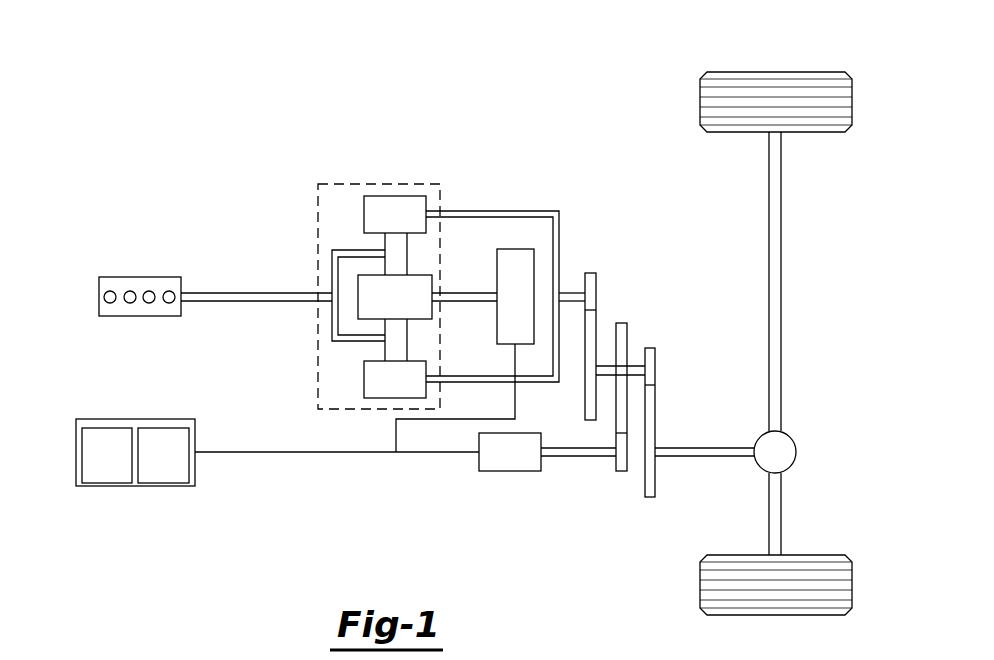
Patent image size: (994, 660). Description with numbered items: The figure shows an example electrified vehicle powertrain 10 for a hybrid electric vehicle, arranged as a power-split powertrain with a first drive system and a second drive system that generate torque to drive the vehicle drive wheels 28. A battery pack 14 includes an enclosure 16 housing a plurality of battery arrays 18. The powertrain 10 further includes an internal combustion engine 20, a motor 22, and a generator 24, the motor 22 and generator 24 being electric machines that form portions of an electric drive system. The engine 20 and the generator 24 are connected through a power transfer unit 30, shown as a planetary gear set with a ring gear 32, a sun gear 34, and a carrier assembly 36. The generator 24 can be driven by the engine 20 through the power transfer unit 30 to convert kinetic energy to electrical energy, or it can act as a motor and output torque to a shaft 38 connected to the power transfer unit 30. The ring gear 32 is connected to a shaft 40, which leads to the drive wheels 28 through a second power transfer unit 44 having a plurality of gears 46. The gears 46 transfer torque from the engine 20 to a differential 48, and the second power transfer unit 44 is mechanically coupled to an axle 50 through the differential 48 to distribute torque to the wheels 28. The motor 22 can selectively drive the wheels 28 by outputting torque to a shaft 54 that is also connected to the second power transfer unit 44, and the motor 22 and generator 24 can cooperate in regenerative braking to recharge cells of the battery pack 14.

The powertrain 10 is at (180, 111).
The battery pack 14 is at (60, 432).
The enclosure 16 is at (136, 419).
The battery arrays 18 is at (106, 478).
The internal combustion engine 20 is at (99, 277).
The motor 22 is at (510, 471).
The generator 24 is at (534, 260).
The vehicle drive wheels 28 is at (777, 72).
The power transfer unit 30 is at (440, 190).
The ring gear 32 is at (364, 214).
The sun gear 34 is at (420, 319).
The carrier assembly 36 is at (332, 273).
The shaft 38 is at (470, 293).
The shaft 40 is at (573, 302).
The second power transfer unit 44 is at (667, 291).
The gears 46 is at (596, 288).
The differential 48 is at (796, 452).
The axle 50 is at (782, 287).
The shaft 54 is at (579, 456).